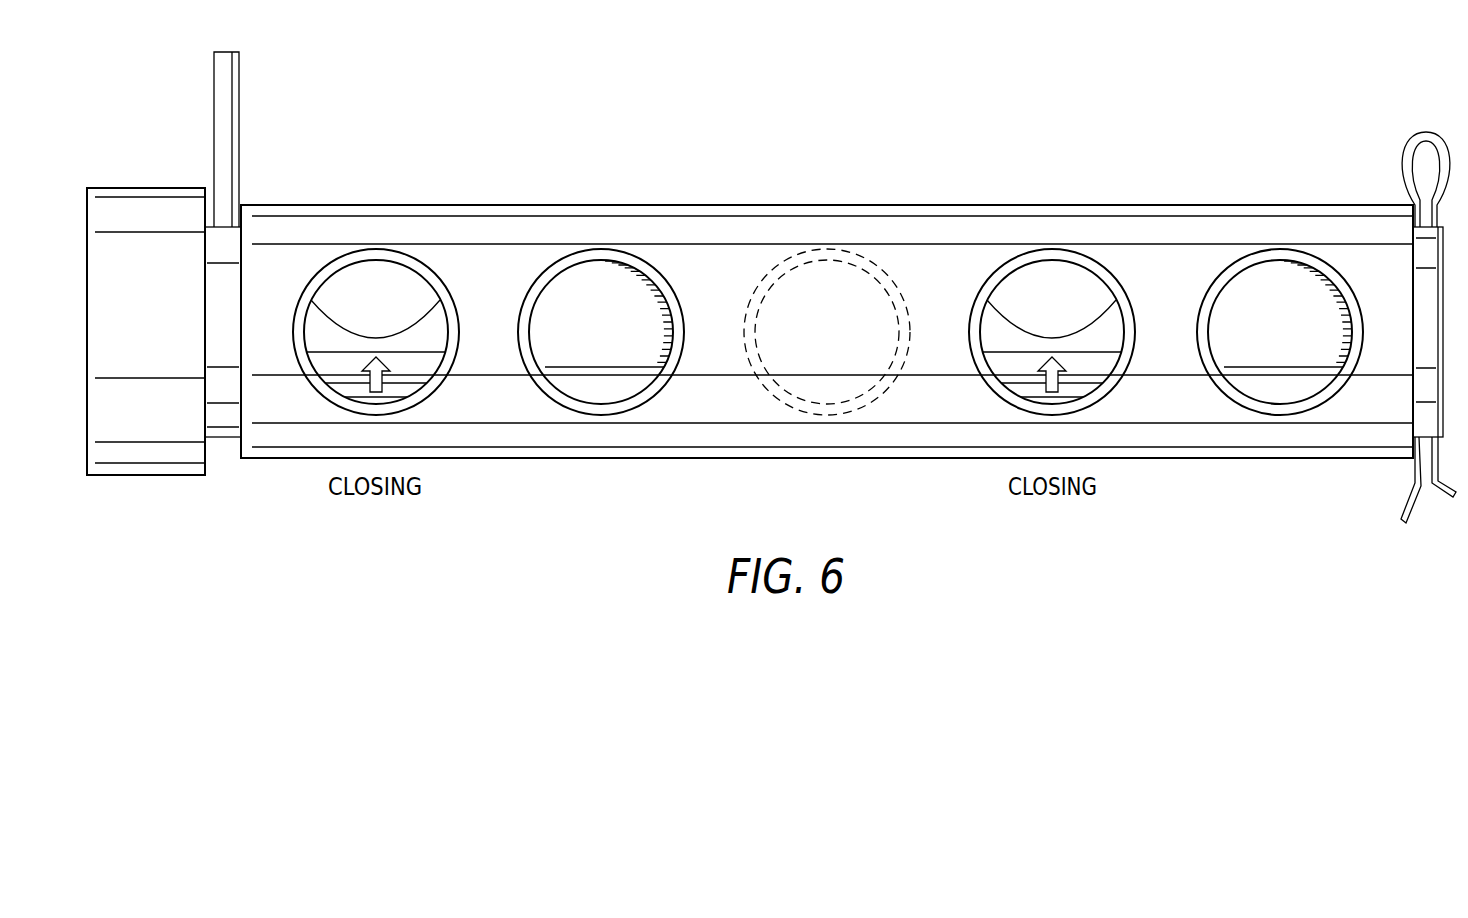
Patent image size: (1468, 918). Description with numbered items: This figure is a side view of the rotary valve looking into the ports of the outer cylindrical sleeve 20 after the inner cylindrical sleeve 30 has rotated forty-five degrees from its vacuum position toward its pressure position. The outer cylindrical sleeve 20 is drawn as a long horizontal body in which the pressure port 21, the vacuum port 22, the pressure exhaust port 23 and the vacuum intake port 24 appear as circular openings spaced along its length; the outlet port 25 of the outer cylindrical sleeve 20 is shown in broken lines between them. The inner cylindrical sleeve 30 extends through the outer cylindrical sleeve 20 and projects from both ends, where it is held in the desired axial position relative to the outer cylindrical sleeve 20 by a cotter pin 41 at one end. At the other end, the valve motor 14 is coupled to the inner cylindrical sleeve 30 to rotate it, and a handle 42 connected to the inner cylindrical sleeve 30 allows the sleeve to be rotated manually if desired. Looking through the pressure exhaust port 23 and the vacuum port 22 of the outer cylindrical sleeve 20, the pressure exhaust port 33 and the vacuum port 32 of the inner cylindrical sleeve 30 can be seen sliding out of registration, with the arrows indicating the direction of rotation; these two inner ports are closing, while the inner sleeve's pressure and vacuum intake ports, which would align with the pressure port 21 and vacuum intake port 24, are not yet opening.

The valve motor 14 is at (143, 212).
The outer cylindrical sleeve 20 is at (957, 232).
The pressure port 21 is at (647, 392).
The vacuum port 22 is at (995, 382).
The pressure exhaust port 23 is at (422, 392).
The vacuum intake port 24 is at (1230, 392).
The outlet port 25 is at (777, 265).
The inner cylindrical sleeve 30 is at (225, 422).
The vacuum port 32 is at (1010, 321).
The pressure exhaust port 33 is at (334, 323).
The cotter pin 41 is at (1408, 163).
The handle 42 is at (223, 135).